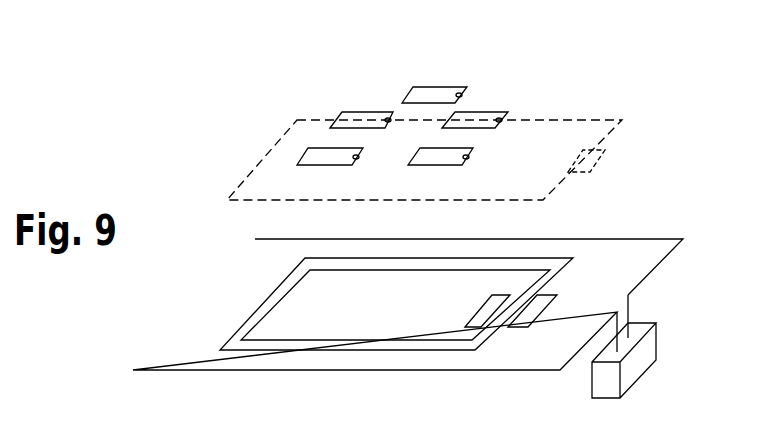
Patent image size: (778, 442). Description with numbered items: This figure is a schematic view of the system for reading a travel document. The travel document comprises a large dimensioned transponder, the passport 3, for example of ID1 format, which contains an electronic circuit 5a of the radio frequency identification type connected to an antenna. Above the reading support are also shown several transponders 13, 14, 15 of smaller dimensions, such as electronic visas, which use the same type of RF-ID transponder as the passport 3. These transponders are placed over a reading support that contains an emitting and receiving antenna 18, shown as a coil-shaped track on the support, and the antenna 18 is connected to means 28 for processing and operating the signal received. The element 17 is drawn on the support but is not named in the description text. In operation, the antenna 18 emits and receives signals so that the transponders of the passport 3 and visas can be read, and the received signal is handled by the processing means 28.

The passport 3 is at (608, 133).
The electronic circuit 5a is at (595, 162).
The transponder 13 is at (475, 120).
The transponder 14 is at (447, 165).
The transponder 15 is at (427, 88).
The substrate with antenna coil 17 is at (232, 313).
The emitting and receiving antenna 18 is at (650, 273).
The means for processing and operating the signal received 28 is at (627, 370).